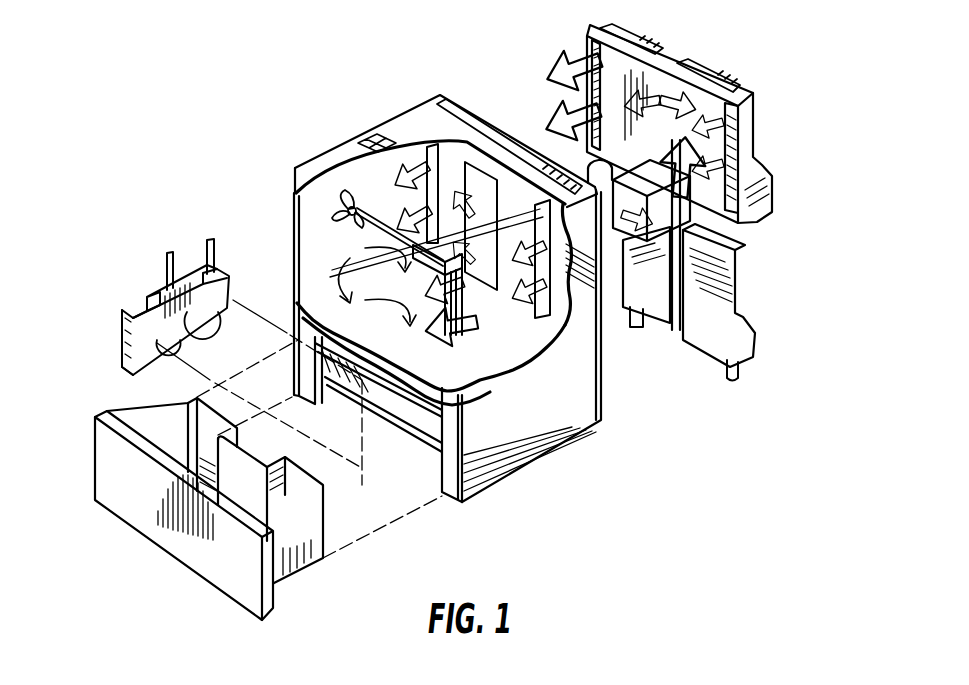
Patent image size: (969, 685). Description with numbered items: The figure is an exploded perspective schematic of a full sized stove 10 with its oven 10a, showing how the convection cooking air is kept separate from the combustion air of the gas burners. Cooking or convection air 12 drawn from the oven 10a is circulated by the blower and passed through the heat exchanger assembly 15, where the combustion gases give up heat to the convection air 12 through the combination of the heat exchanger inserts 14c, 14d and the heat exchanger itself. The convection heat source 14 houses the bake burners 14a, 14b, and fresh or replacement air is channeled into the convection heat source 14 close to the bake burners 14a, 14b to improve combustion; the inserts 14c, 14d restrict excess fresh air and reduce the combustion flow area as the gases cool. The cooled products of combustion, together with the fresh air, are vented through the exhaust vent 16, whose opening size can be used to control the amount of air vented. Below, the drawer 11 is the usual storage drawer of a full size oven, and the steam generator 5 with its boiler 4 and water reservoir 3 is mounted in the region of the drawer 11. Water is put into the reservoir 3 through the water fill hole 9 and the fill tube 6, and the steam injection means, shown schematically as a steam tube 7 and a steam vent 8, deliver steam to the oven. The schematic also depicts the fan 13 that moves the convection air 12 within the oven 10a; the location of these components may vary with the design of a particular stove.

The water reservoir 3 is at (138, 306).
The boiler 4 is at (128, 340).
The steam generator 5 is at (104, 359).
The fill tube 6 is at (211, 238).
The steam tube 7 is at (170, 251).
The steam vent 8 is at (345, 206).
The water fill hole 9 is at (370, 138).
The full sized stove 10 is at (595, 433).
The oven 10a is at (415, 347).
The drawer 11 is at (180, 548).
The convection air 12 is at (557, 72).
The fan 13 is at (477, 178).
The convection heat source 14 is at (787, 332).
The bake burner 14a is at (638, 328).
The bake burner 14b is at (740, 377).
The heat exchanger insert 14c is at (662, 312).
The heat exchanger insert 14d is at (718, 302).
The heat exchanger assembly 15 is at (768, 70).
The exhaust vent 16 is at (452, 98).